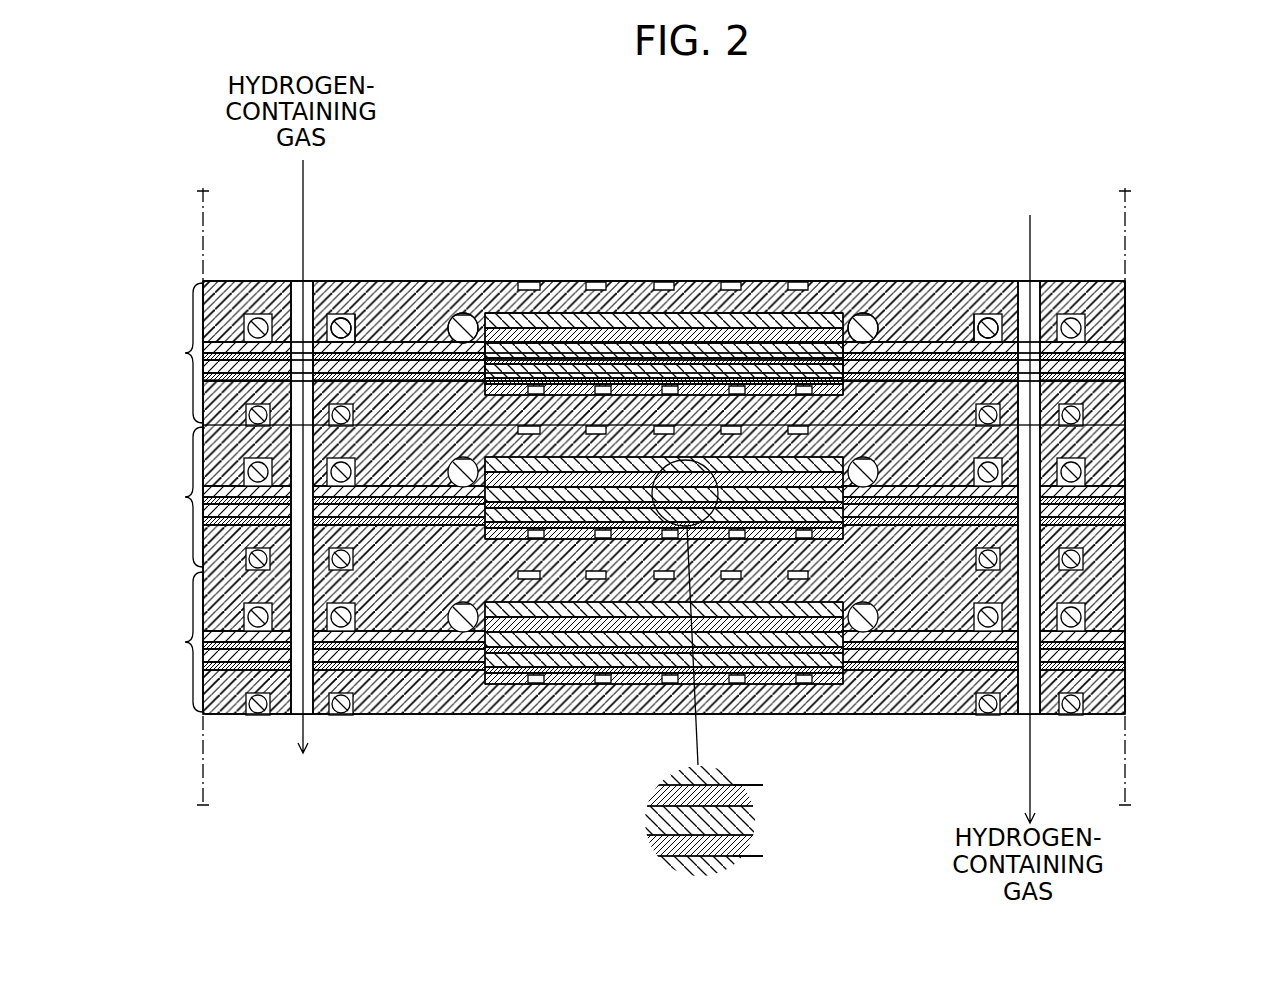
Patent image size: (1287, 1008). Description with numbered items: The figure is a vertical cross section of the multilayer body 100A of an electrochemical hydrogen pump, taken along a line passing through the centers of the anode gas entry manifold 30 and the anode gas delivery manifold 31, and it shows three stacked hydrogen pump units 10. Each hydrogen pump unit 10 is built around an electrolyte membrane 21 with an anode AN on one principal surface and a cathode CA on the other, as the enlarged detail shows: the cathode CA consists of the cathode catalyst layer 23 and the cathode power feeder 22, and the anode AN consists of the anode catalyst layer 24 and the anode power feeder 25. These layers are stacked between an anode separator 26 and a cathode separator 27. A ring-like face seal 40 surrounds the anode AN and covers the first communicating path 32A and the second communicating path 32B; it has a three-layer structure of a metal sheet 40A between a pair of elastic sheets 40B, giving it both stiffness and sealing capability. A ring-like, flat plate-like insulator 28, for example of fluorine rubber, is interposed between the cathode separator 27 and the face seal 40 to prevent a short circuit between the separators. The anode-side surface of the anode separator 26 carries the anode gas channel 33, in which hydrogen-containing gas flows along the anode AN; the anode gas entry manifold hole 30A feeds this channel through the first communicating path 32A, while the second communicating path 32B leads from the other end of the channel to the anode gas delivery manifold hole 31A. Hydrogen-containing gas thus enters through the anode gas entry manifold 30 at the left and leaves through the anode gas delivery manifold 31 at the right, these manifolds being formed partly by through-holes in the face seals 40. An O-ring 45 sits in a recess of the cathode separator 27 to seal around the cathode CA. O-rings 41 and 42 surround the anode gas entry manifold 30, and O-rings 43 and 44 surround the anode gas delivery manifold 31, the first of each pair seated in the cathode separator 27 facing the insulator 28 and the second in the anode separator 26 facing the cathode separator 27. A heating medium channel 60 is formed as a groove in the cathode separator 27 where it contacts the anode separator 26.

The hydrogen pump unit 10 is at (194, 185).
The multilayer body 100A is at (688, 117).
The electrolyte membrane 21 is at (748, 806).
The cathode power feeder 22 is at (725, 767).
The cathode catalyst layer 23 is at (742, 788).
The anode catalyst layer 24 is at (742, 835).
The anode power feeder 25 is at (733, 858).
The anode separator 26 is at (1119, 395).
The cathode separator 27 is at (1119, 298).
The insulator 28 is at (1119, 333).
The anode gas entry manifold 30 is at (300, 706).
The anode gas entry manifold hole 30A is at (272, 273).
The anode gas delivery manifold 31 is at (1013, 706).
The anode gas delivery manifold hole 31A is at (1045, 273).
The first communicating path 32A is at (437, 273).
The second communicating path 32B is at (877, 273).
The anode gas channel 33 is at (625, 273).
The face seal 40 is at (1231, 303).
The metal sheet 40A is at (1119, 358).
The elastic sheets 40B is at (1119, 342).
The O-ring 41 is at (330, 273).
The O-ring 42 is at (362, 273).
The O-ring 43 is at (975, 273).
The O-ring 44 is at (945, 273).
The O-ring 45 is at (463, 273).
The heating medium channel 60 is at (556, 273).
The cathode CA is at (829, 731).
The anode AN is at (813, 877).